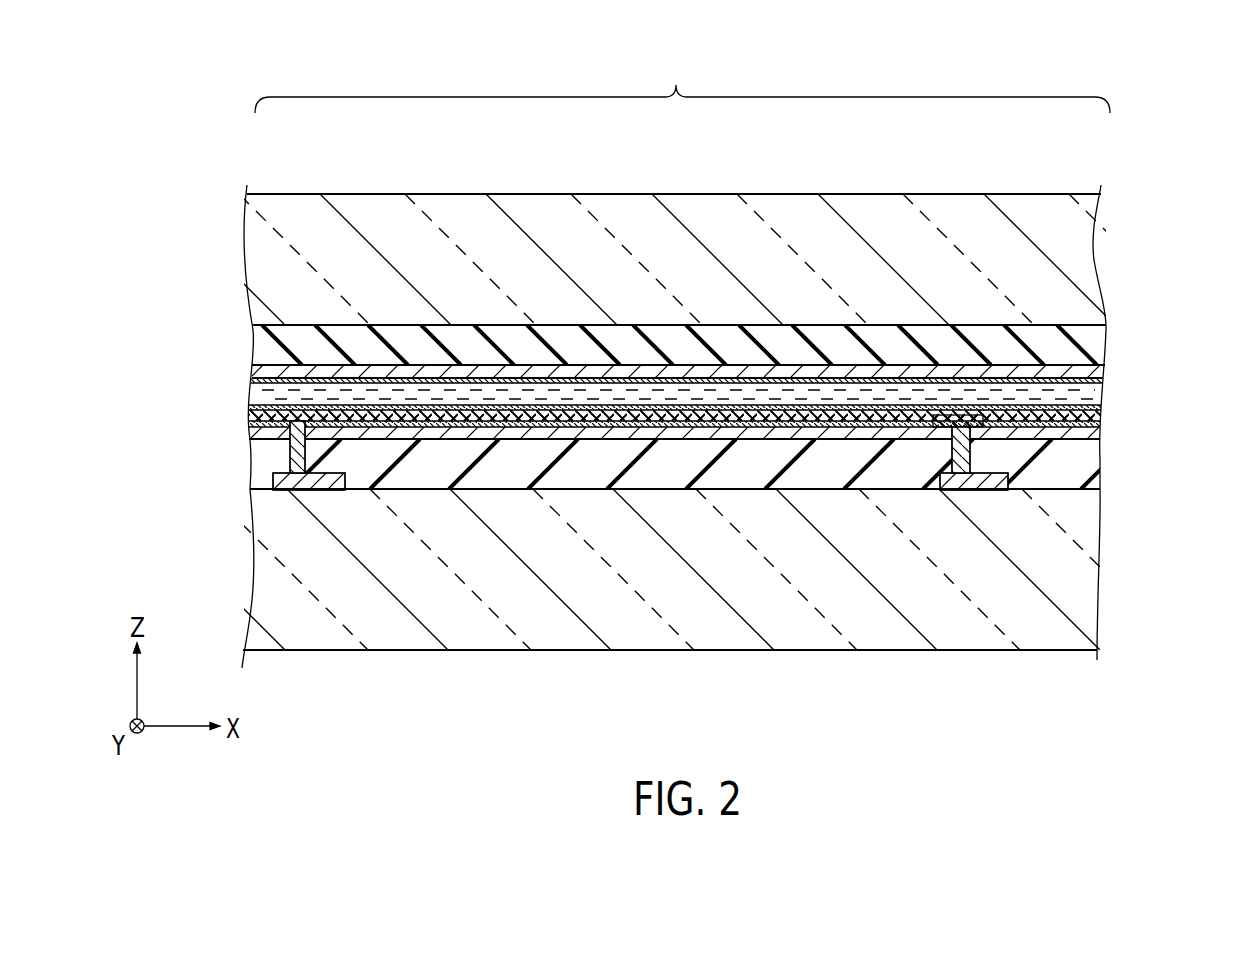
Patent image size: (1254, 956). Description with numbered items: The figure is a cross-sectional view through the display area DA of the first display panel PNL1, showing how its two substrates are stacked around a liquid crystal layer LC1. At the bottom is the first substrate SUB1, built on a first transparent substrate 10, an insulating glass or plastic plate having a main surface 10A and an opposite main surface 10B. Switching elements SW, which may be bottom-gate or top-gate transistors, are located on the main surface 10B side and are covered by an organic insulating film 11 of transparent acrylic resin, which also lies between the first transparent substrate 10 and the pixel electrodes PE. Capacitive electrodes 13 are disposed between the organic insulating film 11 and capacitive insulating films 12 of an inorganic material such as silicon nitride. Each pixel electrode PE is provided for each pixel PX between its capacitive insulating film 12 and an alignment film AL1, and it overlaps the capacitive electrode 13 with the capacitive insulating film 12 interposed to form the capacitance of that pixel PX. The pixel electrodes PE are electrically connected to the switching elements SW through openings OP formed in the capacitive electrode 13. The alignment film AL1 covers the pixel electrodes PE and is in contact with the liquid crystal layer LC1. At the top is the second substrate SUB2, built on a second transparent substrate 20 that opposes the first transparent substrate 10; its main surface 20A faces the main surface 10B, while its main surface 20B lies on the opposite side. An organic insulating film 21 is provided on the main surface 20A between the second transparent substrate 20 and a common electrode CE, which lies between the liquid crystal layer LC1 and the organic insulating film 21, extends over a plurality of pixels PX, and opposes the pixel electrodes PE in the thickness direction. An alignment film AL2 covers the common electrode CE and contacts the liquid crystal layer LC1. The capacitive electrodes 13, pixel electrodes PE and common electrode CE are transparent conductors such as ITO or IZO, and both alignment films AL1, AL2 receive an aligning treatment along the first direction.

The first display panel PNL1 is at (1086, 185).
The second substrate SUB2 is at (1123, 271).
The first substrate SUB1 is at (1123, 547).
The second transparent substrate 20 is at (258, 259).
The main surface 20A is at (736, 342).
The main surface 20B is at (885, 183).
The organic insulating film 21 is at (1097, 357).
The common electrode CE is at (1093, 372).
The alignment film AL2 is at (1097, 382).
The liquid crystal layer LC1 is at (1095, 398).
The alignment film AL1 is at (252, 396).
The pixel electrode PE is at (1095, 422).
The capacitive insulating film 12 is at (252, 420).
The capacitive electrode 13 is at (255, 430).
The organic insulating film 11 is at (262, 475).
The opening OP is at (290, 450).
The switching element SW is at (296, 488).
The pixel PX is at (514, 472).
The first transparent substrate 10 is at (258, 592).
The main surface 10A is at (700, 661).
The main surface 10B is at (752, 474).
The display area DA is at (682, 81).